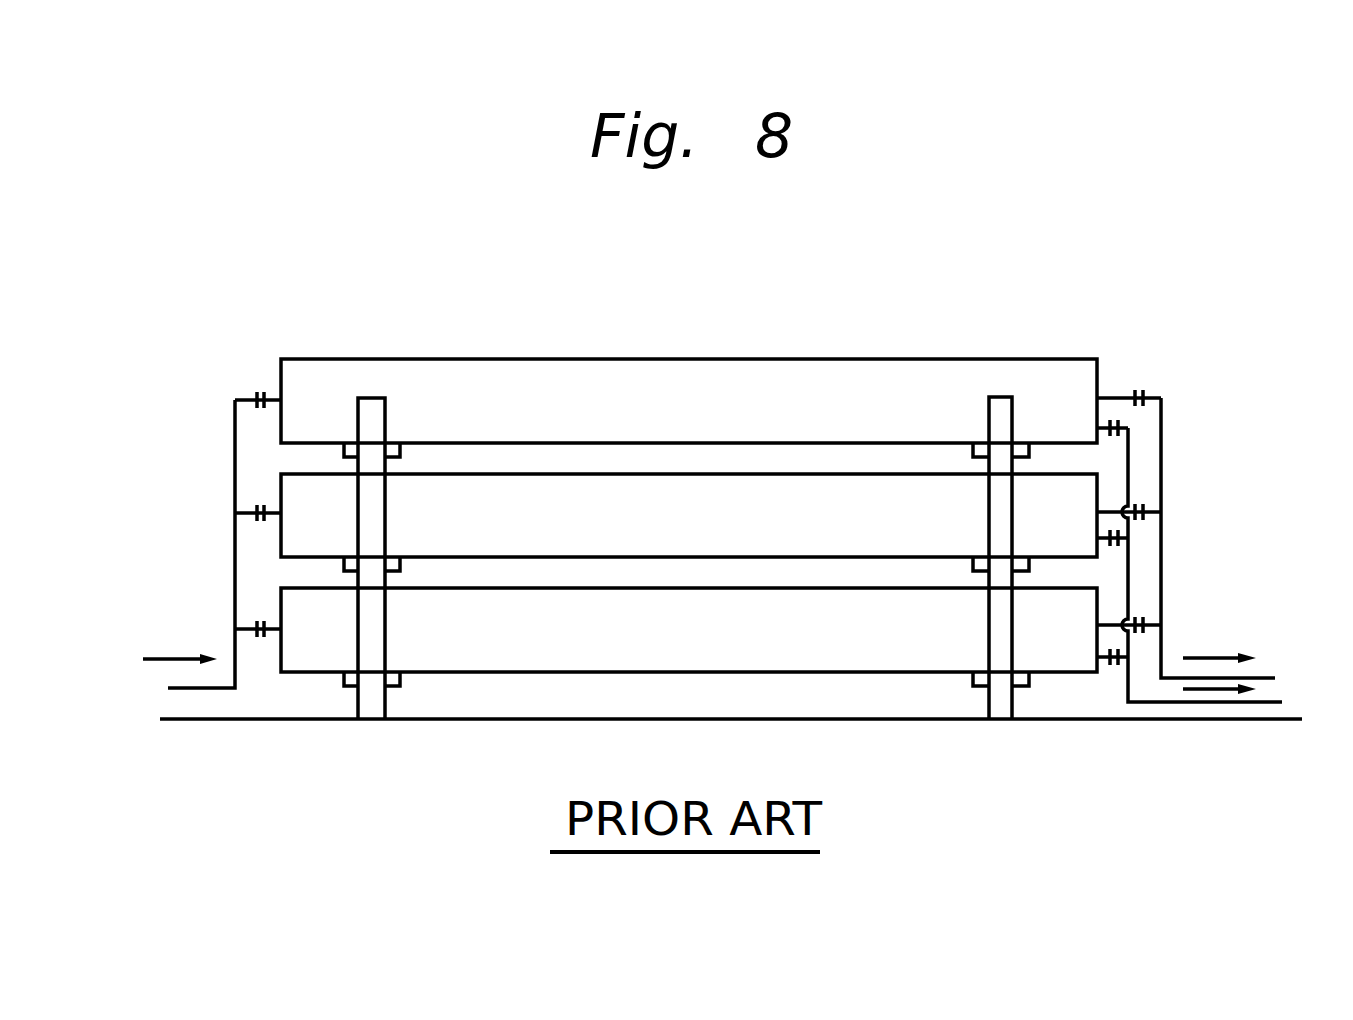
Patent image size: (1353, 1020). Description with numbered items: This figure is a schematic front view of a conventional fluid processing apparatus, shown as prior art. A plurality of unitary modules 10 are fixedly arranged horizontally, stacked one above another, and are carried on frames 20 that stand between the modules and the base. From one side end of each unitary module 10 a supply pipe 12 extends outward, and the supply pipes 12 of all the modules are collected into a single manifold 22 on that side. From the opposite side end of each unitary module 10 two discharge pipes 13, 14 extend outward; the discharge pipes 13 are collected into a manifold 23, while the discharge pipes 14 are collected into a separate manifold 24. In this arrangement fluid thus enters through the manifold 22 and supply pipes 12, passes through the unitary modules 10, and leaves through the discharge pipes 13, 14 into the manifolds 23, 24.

The unitary module 10 is at (665, 637).
The supply pipe 12 is at (272, 398).
The discharge pipe 13 is at (1125, 392).
The discharge pipe 14 is at (1105, 425).
The frame 20 is at (388, 490).
The manifold 22 is at (235, 567).
The manifold 23 is at (1163, 440).
The manifold 24 is at (1130, 605).